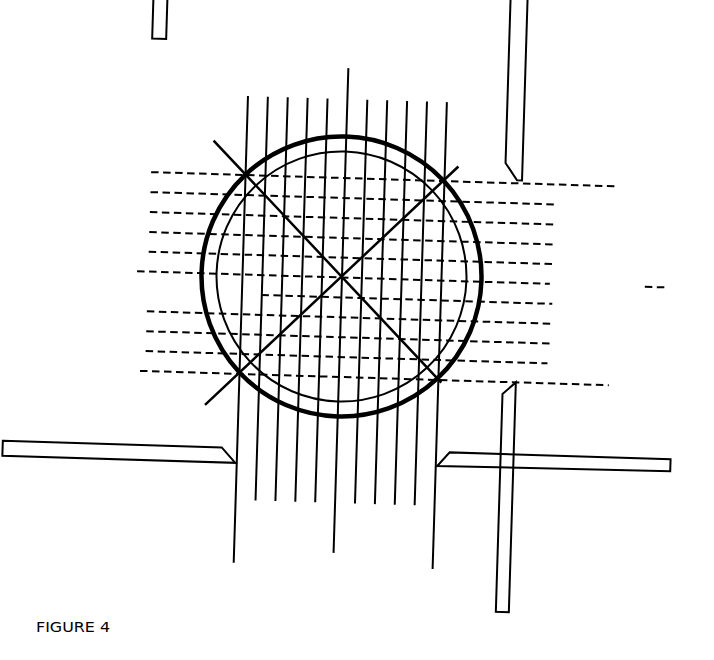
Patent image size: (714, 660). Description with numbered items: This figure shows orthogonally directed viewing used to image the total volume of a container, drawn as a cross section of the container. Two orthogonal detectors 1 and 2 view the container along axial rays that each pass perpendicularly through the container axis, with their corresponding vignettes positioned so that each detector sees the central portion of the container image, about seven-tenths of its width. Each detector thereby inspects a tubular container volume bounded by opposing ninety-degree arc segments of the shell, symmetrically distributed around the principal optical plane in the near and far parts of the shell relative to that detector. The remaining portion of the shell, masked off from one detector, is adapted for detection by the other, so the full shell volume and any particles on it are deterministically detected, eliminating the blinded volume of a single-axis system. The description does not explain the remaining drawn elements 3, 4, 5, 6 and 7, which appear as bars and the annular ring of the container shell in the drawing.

The orthogonal detector 1 is at (642, 278).
The orthogonal detector 2 is at (344, 584).
The upper right frame bar 3 is at (533, 104).
The lower right frame bar 4 is at (533, 585).
The right horizontal frame bar 5 is at (610, 444).
The left horizontal frame bar 6 is at (120, 450).
The annular ring 7 is at (262, 298).